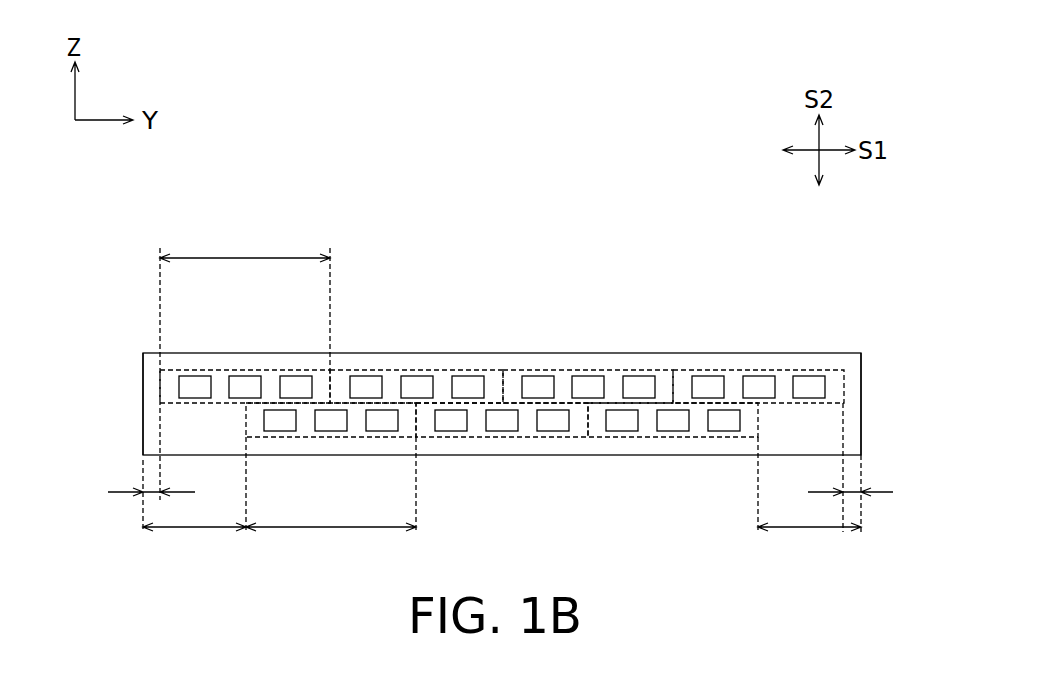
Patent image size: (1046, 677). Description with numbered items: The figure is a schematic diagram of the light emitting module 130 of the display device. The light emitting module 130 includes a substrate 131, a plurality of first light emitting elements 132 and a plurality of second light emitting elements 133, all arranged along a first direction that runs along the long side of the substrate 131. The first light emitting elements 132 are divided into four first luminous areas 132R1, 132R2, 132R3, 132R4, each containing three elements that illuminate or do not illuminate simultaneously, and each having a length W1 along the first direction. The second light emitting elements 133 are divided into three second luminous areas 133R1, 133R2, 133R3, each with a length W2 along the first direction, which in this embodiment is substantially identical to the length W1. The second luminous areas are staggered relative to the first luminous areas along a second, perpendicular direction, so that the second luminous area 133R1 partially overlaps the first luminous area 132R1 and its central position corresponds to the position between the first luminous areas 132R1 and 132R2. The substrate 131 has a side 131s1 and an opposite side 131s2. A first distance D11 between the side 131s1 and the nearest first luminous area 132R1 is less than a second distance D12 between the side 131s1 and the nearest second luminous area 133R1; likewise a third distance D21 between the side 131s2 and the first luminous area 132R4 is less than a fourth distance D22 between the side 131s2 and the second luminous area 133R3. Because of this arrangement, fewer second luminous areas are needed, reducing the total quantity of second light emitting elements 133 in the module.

The light emitting module 130 is at (157, 206).
The substrate 131 is at (150, 382).
The side 131s1 is at (143, 427).
The side 131s2 is at (861, 403).
The first light emitting elements 132 is at (195, 376).
The first luminous area 132R1 is at (287, 370).
The first luminous area 132R2 is at (457, 370).
The first luminous area 132R3 is at (628, 370).
The first luminous area 132R4 is at (805, 370).
The second light emitting elements 133 is at (382, 431).
The second luminous area 133R1 is at (287, 437).
The second luminous area 133R2 is at (457, 437).
The second luminous area 133R3 is at (625, 437).
The length of first luminous area W1 is at (245, 244).
The length of second luminous area W2 is at (331, 540).
The first distance D11 is at (152, 490).
The second distance D12 is at (194, 515).
The third distance D21 is at (851, 490).
The fourth distance D22 is at (809, 515).